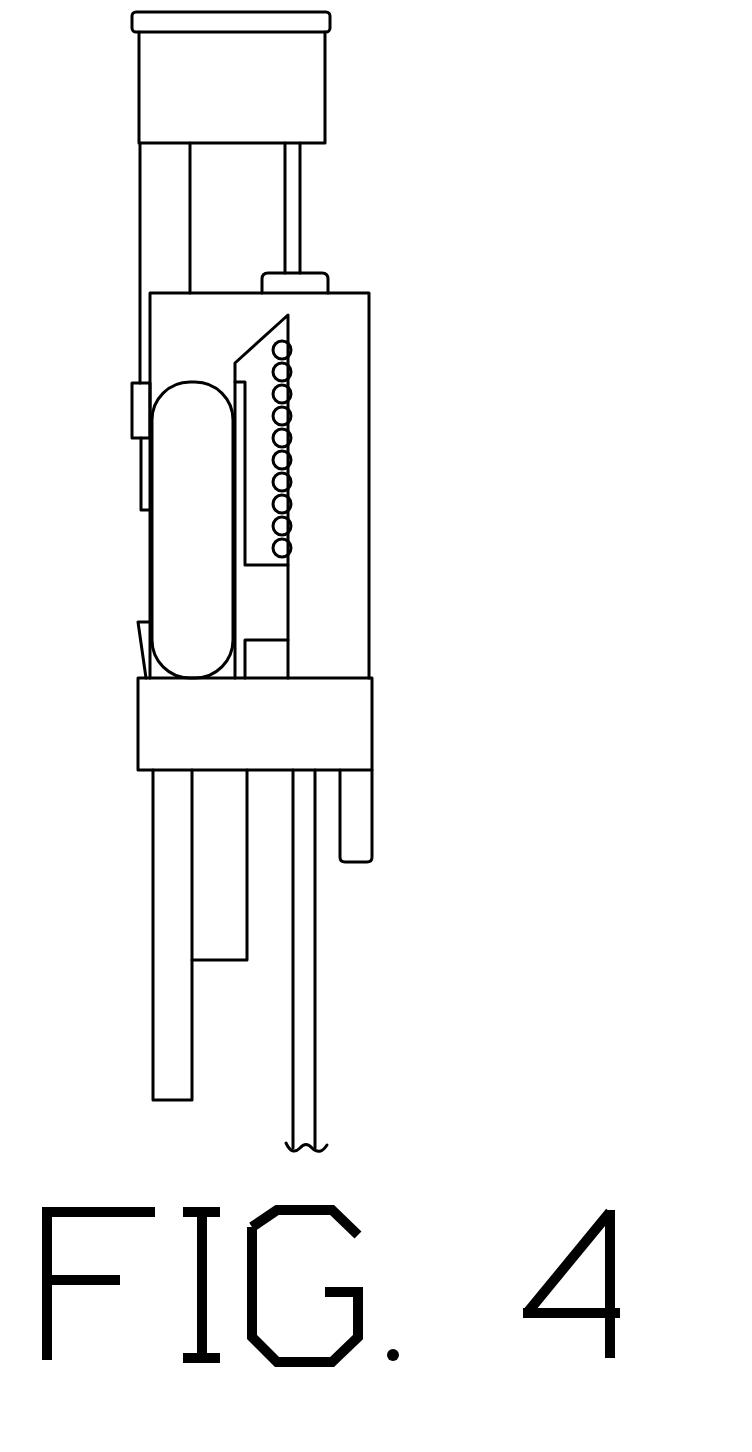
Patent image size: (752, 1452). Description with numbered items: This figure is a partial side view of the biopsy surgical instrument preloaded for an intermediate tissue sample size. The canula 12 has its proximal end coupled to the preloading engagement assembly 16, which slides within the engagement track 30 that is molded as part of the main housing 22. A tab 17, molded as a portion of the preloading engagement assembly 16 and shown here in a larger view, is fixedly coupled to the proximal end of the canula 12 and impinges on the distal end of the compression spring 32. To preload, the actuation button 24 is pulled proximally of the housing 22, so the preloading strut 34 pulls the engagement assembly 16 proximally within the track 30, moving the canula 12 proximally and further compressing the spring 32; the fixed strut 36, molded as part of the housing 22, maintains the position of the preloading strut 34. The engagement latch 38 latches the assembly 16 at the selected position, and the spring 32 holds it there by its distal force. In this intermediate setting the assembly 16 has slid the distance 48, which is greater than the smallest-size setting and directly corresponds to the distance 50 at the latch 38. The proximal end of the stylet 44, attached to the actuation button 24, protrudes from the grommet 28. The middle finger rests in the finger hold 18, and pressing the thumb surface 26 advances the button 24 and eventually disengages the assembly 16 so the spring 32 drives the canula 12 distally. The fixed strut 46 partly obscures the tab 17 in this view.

The canula 12 is at (305, 965).
The preloading engagement assembly 16 is at (203, 945).
The tab 17 is at (291, 637).
The finger hold 18 is at (167, 550).
The main housing 22 is at (347, 393).
The actuation button 24 is at (310, 70).
The thumb surface 26 is at (320, 22).
The grommet 28 is at (317, 277).
The engagement track 30 is at (178, 1075).
The compression spring 32 is at (290, 457).
The preloading strut 34 is at (183, 240).
The fixed strut 36 is at (140, 403).
The engagement latch 38 is at (137, 625).
The stylet 44 is at (292, 180).
The fixed strut 46 is at (355, 710).
The distance 48 is at (193, 1012).
The distance 50 is at (147, 570).